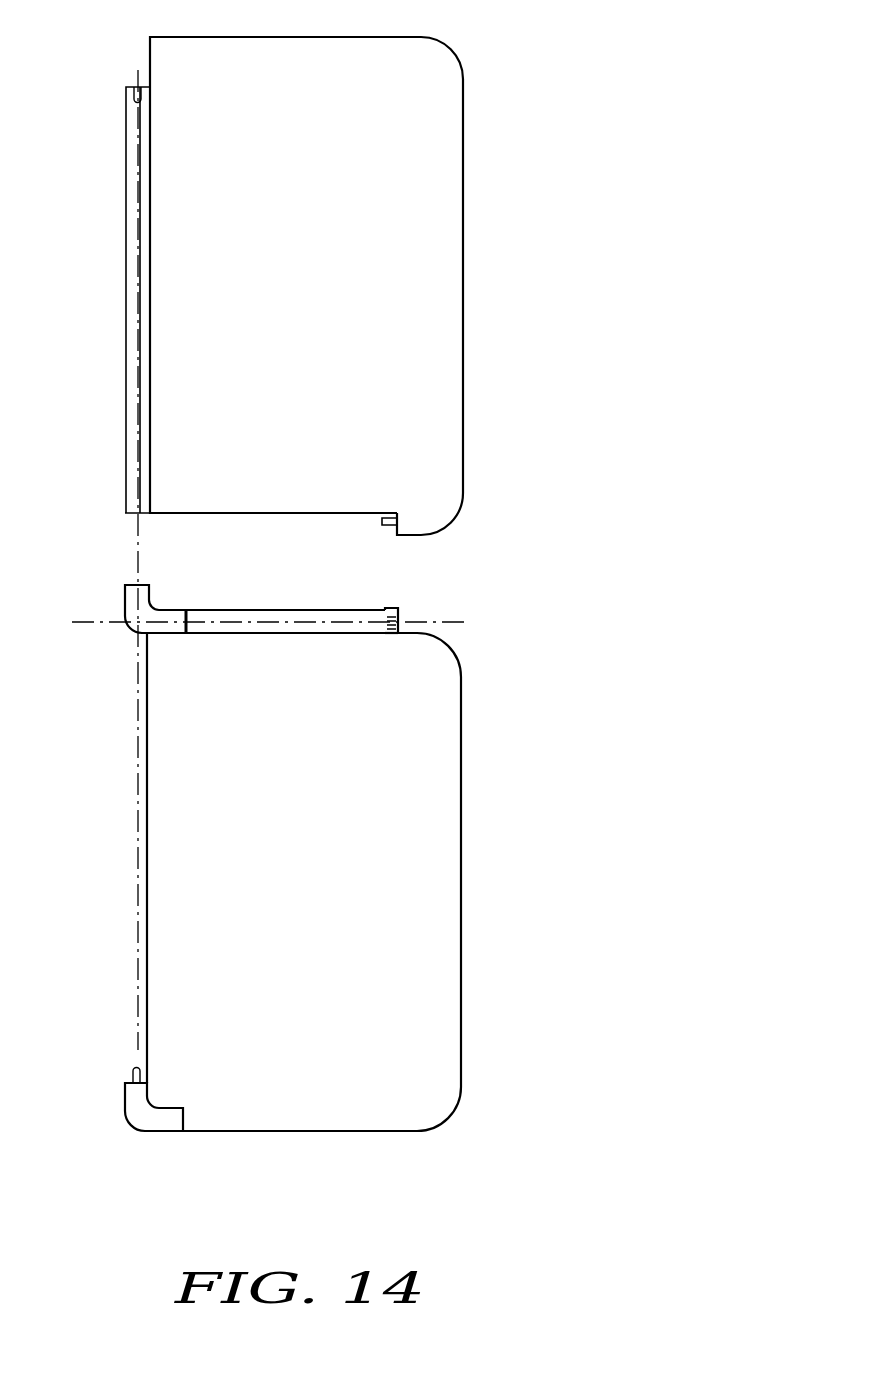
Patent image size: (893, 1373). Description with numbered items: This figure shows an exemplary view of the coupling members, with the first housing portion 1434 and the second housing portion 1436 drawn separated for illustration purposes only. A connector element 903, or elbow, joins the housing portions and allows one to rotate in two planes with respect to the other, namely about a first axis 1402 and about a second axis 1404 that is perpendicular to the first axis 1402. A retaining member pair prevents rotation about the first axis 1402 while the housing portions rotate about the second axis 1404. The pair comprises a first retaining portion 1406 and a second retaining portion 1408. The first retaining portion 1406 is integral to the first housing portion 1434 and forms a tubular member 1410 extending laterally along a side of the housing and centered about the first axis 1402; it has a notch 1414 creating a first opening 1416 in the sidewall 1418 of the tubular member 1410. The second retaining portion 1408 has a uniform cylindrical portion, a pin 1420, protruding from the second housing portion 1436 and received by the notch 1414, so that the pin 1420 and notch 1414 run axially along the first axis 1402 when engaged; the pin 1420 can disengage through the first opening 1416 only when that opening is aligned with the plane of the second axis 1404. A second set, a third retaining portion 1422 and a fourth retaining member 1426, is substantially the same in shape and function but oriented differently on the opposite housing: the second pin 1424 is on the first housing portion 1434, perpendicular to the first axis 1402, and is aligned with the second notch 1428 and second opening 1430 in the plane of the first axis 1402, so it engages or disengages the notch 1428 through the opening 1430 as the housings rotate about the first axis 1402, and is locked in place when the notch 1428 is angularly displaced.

The connector element 903 is at (130, 612).
The first axis 1402 is at (475, 622).
The second axis 1404 is at (135, 877).
The first retaining portion 1406 is at (389, 634).
The second retaining portion 1408 is at (447, 512).
The tubular member 1410 is at (394, 613).
The notch 1414 is at (388, 620).
The first opening 1416 is at (386, 630).
The sidewall 1418 is at (240, 612).
The pin 1420 is at (384, 525).
The third retaining portion 1422 is at (140, 1124).
The second pin 1424 is at (132, 1073).
The fourth retaining member 1426 is at (131, 136).
The second notch 1428 is at (138, 62).
The second opening 1430 is at (135, 92).
The first housing portion 1434 is at (453, 946).
The second housing portion 1436 is at (453, 220).